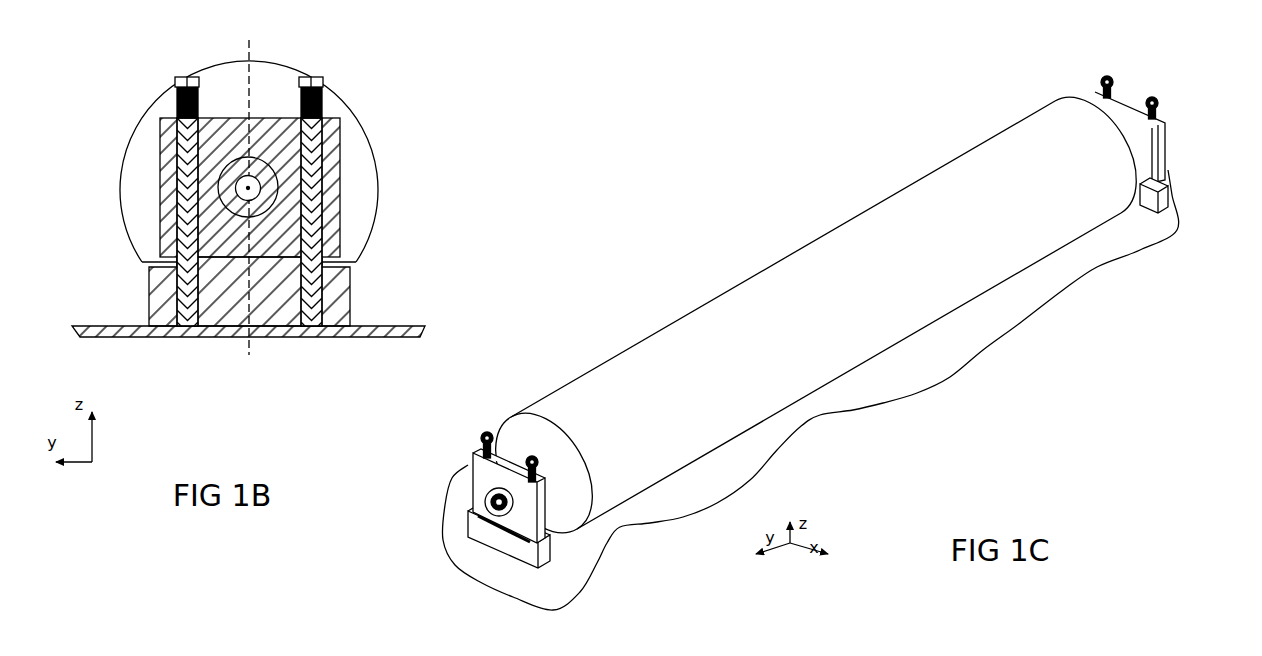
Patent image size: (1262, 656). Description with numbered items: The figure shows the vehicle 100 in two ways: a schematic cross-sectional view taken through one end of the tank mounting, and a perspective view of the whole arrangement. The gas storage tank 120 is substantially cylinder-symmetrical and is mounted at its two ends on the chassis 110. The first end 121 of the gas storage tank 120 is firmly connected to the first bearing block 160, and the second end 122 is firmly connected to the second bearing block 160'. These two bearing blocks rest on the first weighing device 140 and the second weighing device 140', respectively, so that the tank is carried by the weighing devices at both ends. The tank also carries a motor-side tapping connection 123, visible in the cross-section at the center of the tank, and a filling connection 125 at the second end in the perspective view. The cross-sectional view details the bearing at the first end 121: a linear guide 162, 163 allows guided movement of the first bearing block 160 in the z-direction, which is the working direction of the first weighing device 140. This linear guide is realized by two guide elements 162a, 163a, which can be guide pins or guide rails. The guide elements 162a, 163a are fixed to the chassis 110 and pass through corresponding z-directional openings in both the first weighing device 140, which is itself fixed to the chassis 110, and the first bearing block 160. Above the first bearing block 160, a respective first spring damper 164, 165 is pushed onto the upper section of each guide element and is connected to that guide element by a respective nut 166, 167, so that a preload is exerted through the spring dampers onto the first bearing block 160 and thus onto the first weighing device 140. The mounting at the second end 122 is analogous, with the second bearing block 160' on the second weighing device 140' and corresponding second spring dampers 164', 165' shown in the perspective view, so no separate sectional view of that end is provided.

In FIG. 1B, the vehicle 100 is at (237, 25).
In FIG. 1C, the vehicle 100 is at (795, 150).
In FIG. 1B, the chassis 110 is at (418, 328).
In FIG. 1C, the chassis 110 is at (913, 372).
In FIG. 1B, the gas storage tank 120 is at (137, 203).
In FIG. 1C, the gas storage tank 120 is at (925, 264).
In FIG. 1C, the first end of the gas storage tank 121 is at (1075, 81).
In FIG. 1C, the second end of the gas storage tank 122 is at (506, 401).
In FIG. 1B, the tapping connection of the gas storage tank 123 is at (256, 172).
In FIG. 1C, the filling connection of the gas storage tank 125 is at (477, 498).
In FIG. 1B, the first weighing device 140 is at (280, 291).
In FIG. 1C, the first weighing device 140 is at (1190, 195).
In FIG. 1C, the second weighing device 140' is at (567, 536).
In FIG. 1B, the first bearing block 160 is at (249, 187).
In FIG. 1C, the first bearing block 160 is at (1166, 137).
In FIG. 1C, the second bearing block 160' is at (469, 493).
In FIG. 1B, the first linear guide 162 is at (310, 330).
In FIG. 1B, the guide element of the first linear guide 162a is at (358, 250).
In FIG. 1B, the first linear guide 163 is at (186, 330).
In FIG. 1B, the guide element of the first linear guide 163a is at (140, 250).
In FIG. 1B, the first spring damper unit 164 is at (357, 99).
In FIG. 1C, the first spring damper unit 164 is at (1197, 105).
In FIG. 1C, the second spring damper unit 164' is at (585, 458).
In FIG. 1B, the first spring damper unit 165 is at (140, 99).
In FIG. 1C, the first spring damper unit 165 is at (1155, 81).
In FIG. 1C, the second spring damper unit 165' is at (546, 430).
In FIG. 1B, the nut 166 is at (327, 77).
In FIG. 1B, the nut 167 is at (172, 77).